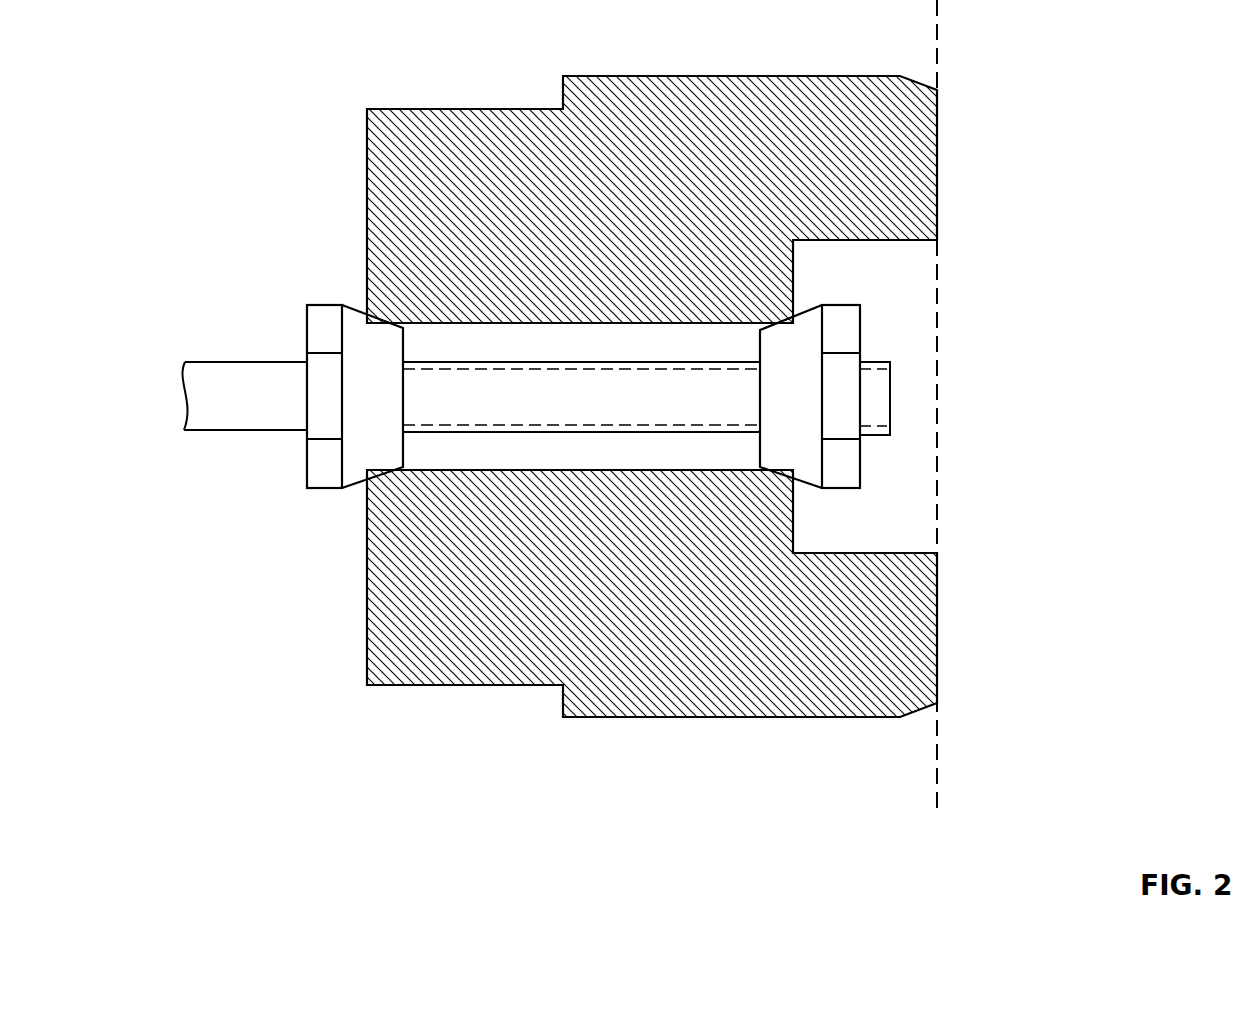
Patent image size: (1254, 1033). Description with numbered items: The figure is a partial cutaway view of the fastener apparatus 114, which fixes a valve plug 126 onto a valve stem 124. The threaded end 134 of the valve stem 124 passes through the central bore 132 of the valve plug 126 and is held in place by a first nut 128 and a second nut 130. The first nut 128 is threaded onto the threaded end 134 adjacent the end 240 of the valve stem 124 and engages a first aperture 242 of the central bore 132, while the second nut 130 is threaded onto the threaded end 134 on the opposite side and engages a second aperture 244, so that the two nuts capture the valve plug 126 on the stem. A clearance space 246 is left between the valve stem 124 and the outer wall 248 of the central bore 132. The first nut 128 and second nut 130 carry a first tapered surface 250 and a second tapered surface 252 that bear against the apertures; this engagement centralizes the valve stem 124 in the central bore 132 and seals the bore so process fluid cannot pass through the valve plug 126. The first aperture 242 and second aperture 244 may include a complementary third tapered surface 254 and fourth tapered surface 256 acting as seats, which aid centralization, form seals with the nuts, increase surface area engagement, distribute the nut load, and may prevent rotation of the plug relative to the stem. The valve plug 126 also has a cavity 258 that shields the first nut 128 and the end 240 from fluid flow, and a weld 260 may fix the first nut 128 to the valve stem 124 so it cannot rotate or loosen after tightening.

The fastener apparatus 114 is at (200, 98).
The valve stem 124 is at (238, 396).
The valve plug 126 is at (620, 98).
The first nut 128 is at (843, 323).
The second nut 130 is at (328, 322).
The central bore 132 is at (567, 322).
The threaded end 134 is at (517, 398).
The end 240 is at (893, 410).
The first aperture 242 is at (653, 443).
The second aperture 244 is at (428, 343).
The clearance space 246 is at (745, 453).
The outer wall 248 is at (531, 470).
The first tapered surface 250 is at (800, 482).
The second tapered surface 252 is at (366, 316).
The third tapered surface 254 is at (793, 480).
The fourth tapered surface 256 is at (372, 315).
The cavity 258 is at (850, 273).
The weld 260 is at (862, 354).